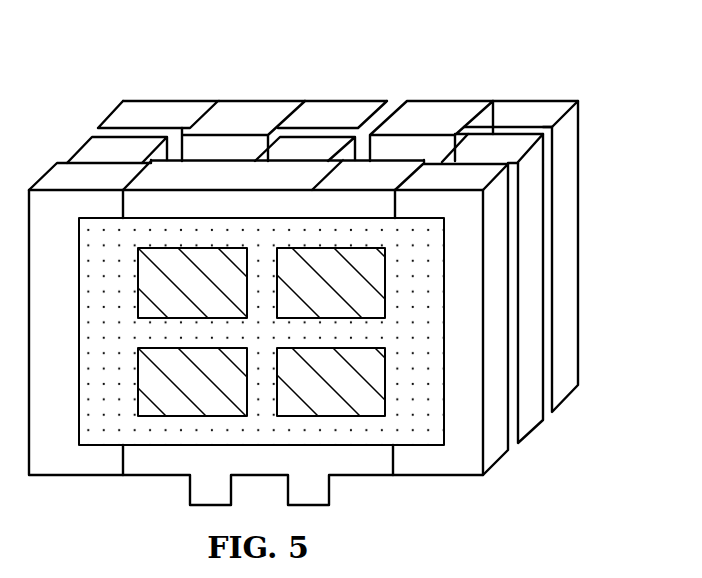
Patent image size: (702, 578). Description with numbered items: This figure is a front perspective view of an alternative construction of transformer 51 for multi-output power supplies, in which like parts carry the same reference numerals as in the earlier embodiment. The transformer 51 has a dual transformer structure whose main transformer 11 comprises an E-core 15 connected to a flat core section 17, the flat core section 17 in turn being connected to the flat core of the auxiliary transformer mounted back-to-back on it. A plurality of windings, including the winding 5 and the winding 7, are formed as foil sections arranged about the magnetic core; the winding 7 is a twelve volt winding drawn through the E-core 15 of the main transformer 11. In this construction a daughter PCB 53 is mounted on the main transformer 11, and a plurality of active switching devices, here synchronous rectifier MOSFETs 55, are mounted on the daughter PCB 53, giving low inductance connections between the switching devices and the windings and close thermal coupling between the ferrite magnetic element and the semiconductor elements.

The transformer 51 is at (330, 272).
The winding 7 is at (256, 110).
The flat core section 17 is at (573, 176).
The main transformer 11 is at (364, 256).
The E-core 15 is at (510, 437).
The winding 5 is at (268, 344).
The daughter PCB 53 is at (262, 358).
The synchronous rectifier MOSFETs 55 is at (147, 282).